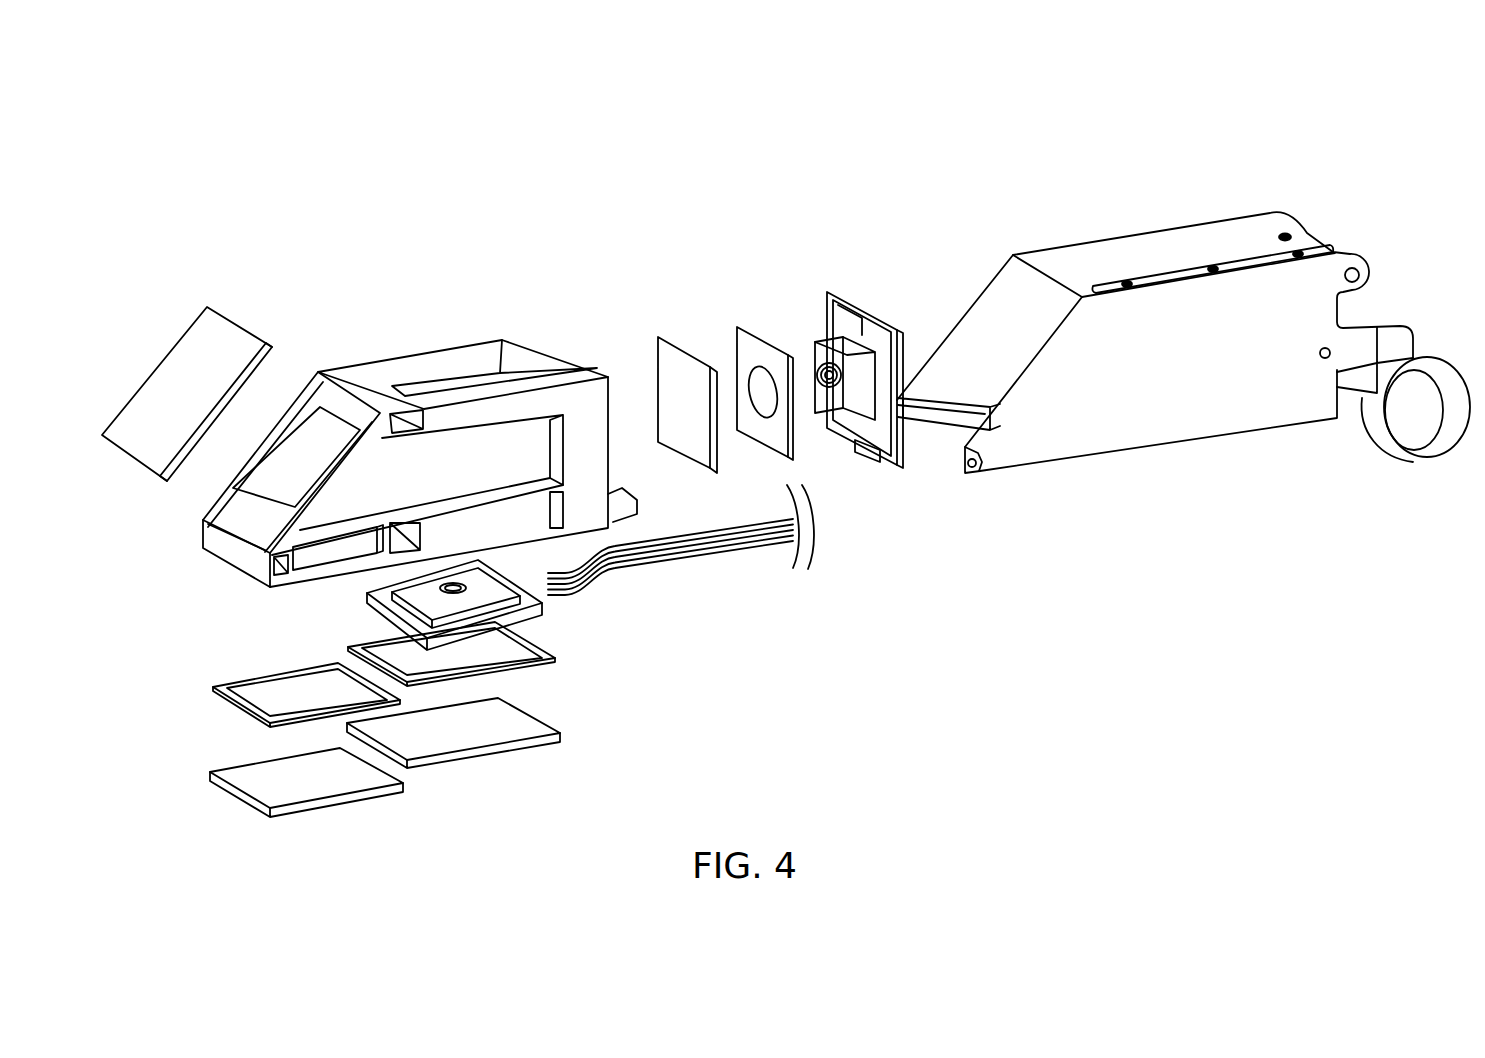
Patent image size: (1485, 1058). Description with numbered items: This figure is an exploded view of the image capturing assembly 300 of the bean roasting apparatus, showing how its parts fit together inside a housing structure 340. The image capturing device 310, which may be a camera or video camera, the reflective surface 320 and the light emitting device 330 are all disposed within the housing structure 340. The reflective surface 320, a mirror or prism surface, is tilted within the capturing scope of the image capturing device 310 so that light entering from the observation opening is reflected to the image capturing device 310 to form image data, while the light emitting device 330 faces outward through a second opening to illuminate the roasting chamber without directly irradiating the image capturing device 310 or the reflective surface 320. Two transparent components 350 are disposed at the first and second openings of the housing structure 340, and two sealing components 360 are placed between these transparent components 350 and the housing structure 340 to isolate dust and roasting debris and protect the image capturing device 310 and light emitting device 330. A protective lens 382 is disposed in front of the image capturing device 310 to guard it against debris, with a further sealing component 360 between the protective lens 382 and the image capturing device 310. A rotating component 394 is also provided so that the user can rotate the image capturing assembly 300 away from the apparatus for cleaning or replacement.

The image capturing assembly 300 is at (1290, 100).
The image capturing device 310 is at (858, 312).
The reflective surface 320 is at (186, 346).
The light emitting device 330 is at (517, 604).
The housing structure 340 is at (532, 345).
The transparent component 350 is at (525, 725).
The sealing component 360 is at (770, 352).
The protective lens 382 is at (684, 372).
The rotating component 394 is at (1413, 448).